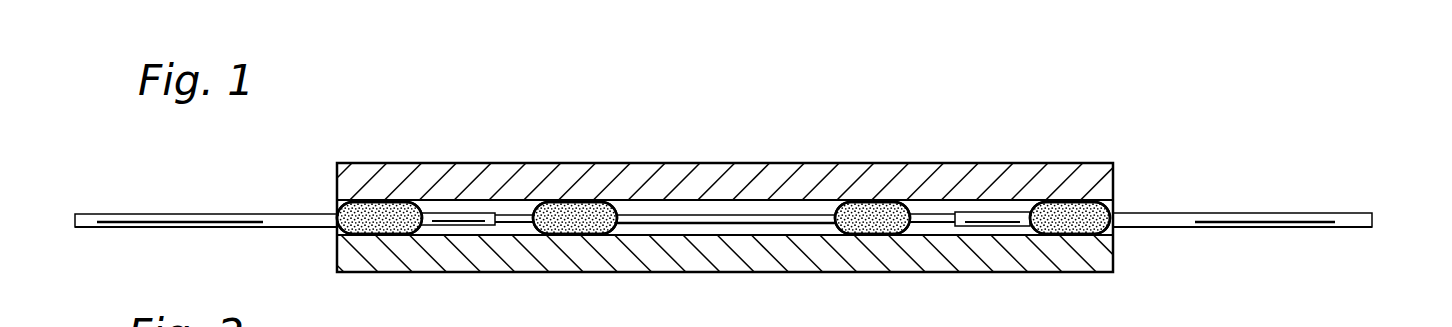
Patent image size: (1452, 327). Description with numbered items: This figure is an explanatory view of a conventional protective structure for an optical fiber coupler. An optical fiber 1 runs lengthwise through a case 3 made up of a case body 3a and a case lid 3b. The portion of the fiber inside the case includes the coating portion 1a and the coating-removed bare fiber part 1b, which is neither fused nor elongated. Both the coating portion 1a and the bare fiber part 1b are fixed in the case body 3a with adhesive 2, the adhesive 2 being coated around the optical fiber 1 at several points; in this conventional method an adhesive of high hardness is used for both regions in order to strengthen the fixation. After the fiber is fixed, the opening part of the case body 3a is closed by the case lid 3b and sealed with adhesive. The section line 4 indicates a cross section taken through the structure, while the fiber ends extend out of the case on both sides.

The optical fiber 1 is at (1221, 208).
The coating portion 1a is at (982, 208).
The bare fiber part 1b is at (700, 214).
The adhesive 2 is at (372, 206).
The case 3 is at (751, 206).
The case body 3a is at (1115, 240).
The case lid 3b is at (473, 162).
The section line 4 is at (592, 207).